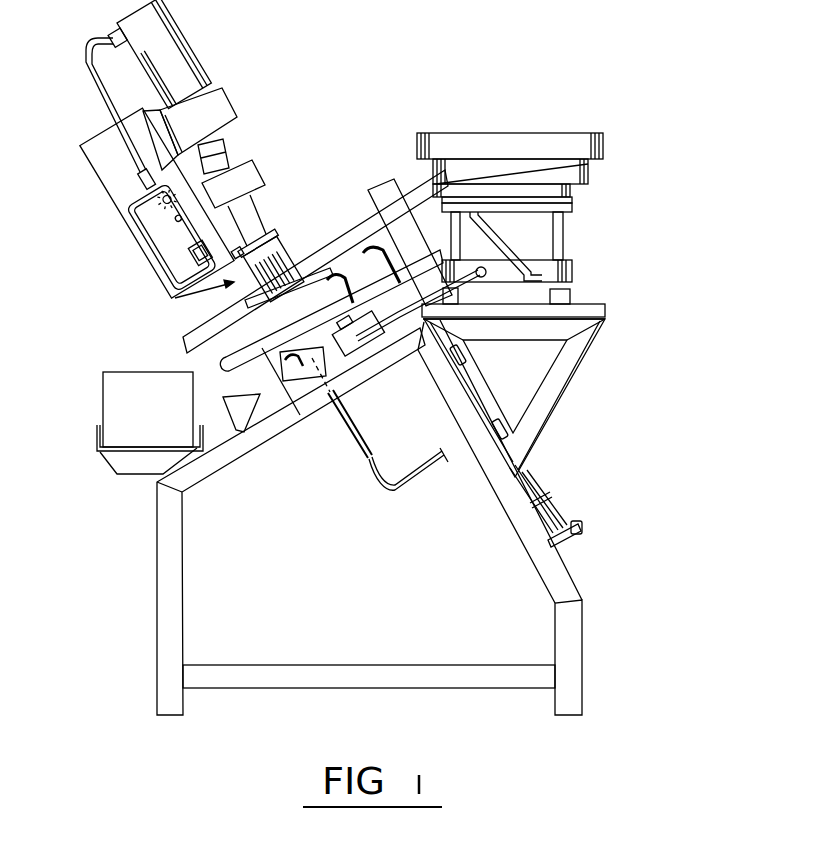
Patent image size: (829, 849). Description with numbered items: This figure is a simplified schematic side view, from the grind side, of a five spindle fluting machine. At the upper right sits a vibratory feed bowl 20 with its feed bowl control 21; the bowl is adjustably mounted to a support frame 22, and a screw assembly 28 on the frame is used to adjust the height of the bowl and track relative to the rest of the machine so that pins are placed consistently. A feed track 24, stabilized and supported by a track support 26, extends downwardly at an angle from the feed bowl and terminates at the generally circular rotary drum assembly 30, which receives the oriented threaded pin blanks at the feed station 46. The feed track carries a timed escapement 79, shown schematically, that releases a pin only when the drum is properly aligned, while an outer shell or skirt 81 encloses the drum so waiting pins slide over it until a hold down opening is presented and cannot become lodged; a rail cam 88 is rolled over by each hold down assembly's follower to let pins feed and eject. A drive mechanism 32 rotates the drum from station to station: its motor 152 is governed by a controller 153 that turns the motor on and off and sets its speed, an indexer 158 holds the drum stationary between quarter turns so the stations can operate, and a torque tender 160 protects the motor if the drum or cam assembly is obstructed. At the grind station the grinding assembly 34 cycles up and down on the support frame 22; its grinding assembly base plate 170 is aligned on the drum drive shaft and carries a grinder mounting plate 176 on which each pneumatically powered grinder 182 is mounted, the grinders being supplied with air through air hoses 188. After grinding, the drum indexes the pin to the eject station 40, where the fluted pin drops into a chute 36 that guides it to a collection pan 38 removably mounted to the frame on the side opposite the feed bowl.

The vibratory feed bowl 20 is at (590, 158).
The feed bowl control 21 is at (357, 338).
The support frame 22 is at (110, 162).
The feed track 24 is at (408, 133).
The track support 26 is at (397, 177).
The screw assembly 28 is at (553, 510).
The rotary drum assembly 30 is at (299, 215).
The drive mechanism 32 is at (262, 93).
The grinding assembly 34 is at (205, 359).
The chute 36 is at (180, 350).
The collection pan 38 is at (115, 404).
The eject station 40 is at (172, 300).
The feed station 46 is at (372, 182).
The timed escapement 79 is at (305, 235).
The outer shell or skirt 81 is at (328, 268).
The rail cam 88 is at (273, 227).
The motor 152 is at (185, 50).
The controller 153 is at (153, 235).
The indexer 158 is at (232, 174).
The torque tender 160 is at (230, 148).
The grinding assembly base plate 170 is at (272, 355).
The grinder mounting plate 176 is at (240, 375).
The grinder 182 is at (300, 308).
The air hoses 188 is at (451, 248).